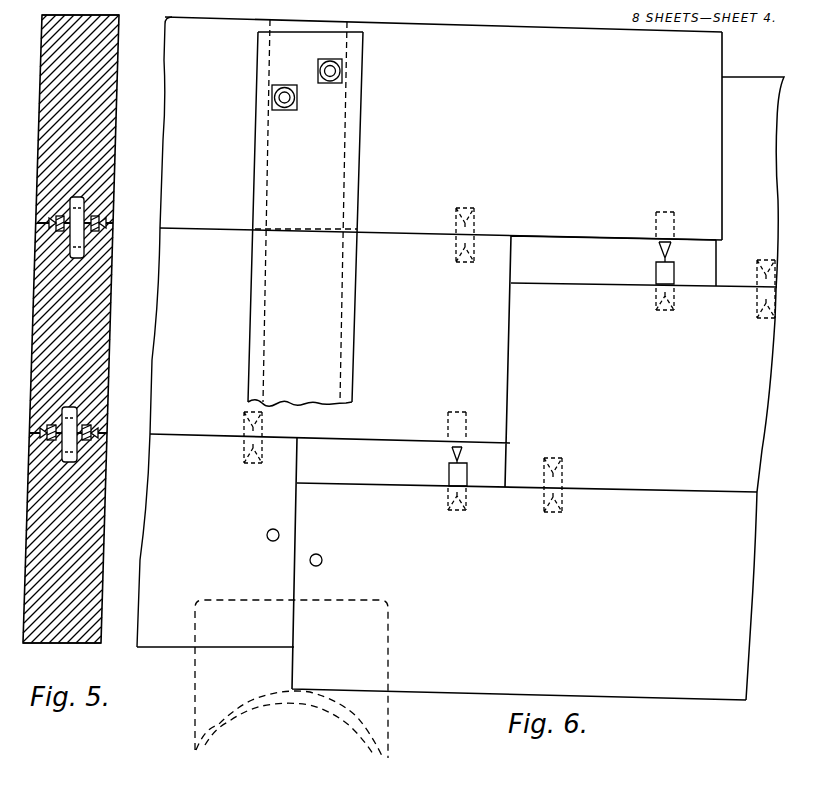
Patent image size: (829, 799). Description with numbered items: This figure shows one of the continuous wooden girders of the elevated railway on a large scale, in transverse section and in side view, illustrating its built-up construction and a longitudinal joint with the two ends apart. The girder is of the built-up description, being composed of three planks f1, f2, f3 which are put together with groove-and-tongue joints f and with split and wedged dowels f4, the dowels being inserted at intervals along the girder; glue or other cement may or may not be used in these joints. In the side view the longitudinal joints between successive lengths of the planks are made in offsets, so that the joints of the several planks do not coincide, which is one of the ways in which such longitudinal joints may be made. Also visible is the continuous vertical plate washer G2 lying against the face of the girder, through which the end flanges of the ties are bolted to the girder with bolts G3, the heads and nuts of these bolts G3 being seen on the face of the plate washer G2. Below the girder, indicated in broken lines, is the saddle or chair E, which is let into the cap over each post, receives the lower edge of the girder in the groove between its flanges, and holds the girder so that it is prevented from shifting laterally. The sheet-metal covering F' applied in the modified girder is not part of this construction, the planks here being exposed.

In FIG. 5, the wall F' is at (104, 329).
In FIG. 5, the plank f3 is at (185, 118).
In FIG. 6, the plank f3 is at (460, 358).
In FIG. 5, the plank f2 is at (185, 335).
In FIG. 6, the plank f2 is at (463, 361).
In FIG. 5, the plank f1 is at (182, 548).
In FIG. 6, the plank f1 is at (447, 569).
In FIG. 5, the groove-and-tongue joint f is at (165, 437).
In FIG. 5, the split and wedged dowel f4 is at (120, 462).
In FIG. 6, the split and wedged dowel f4 is at (578, 510).
In FIG. 6, the continuous vertical plate washer G2 is at (305, 213).
In FIG. 6, the bolt G3 is at (333, 82).
In FIG. 6, the saddle or chair E is at (291, 679).